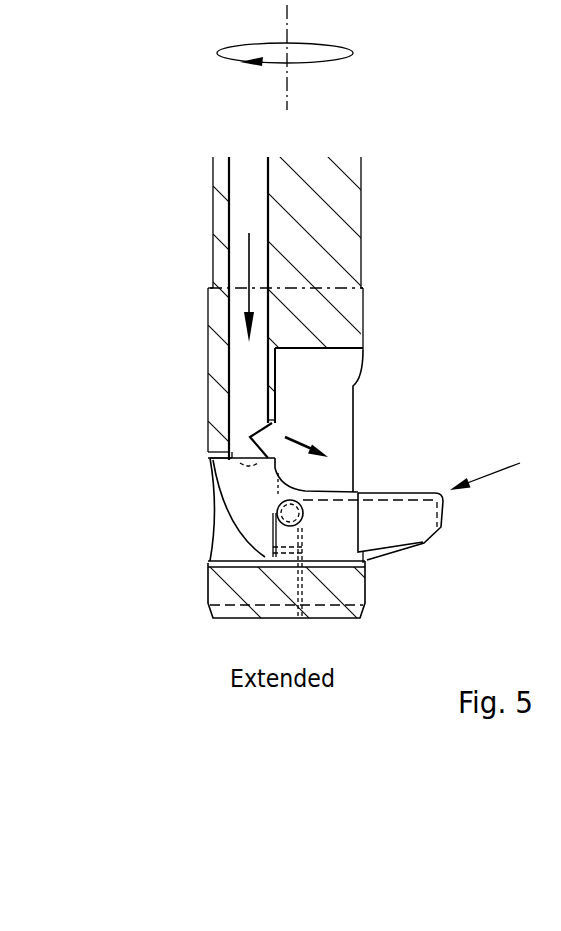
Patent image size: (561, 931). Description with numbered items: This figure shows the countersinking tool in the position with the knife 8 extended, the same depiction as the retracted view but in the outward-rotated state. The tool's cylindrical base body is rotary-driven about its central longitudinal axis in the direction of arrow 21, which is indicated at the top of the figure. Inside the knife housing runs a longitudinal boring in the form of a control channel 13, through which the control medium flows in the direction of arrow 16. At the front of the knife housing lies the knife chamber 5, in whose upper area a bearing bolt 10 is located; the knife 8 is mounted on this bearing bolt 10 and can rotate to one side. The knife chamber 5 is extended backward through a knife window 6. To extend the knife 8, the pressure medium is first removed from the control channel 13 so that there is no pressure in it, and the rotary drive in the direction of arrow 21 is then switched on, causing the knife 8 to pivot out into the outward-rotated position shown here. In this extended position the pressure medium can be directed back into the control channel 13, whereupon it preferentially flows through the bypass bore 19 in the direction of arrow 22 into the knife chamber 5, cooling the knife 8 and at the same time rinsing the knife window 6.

The arrow direction of rotary drive 21 is at (353, 53).
The control channel 13 is at (248, 203).
The arrow direction of control medium flow 16 is at (248, 262).
The bypass bore 19 is at (247, 437).
The arrow direction of flow through bypass bore 22 is at (285, 437).
The knife chamber 5 is at (325, 470).
The knife 8 is at (498, 468).
The knife window 6 is at (227, 527).
The bearing bolt 10 is at (273, 518).